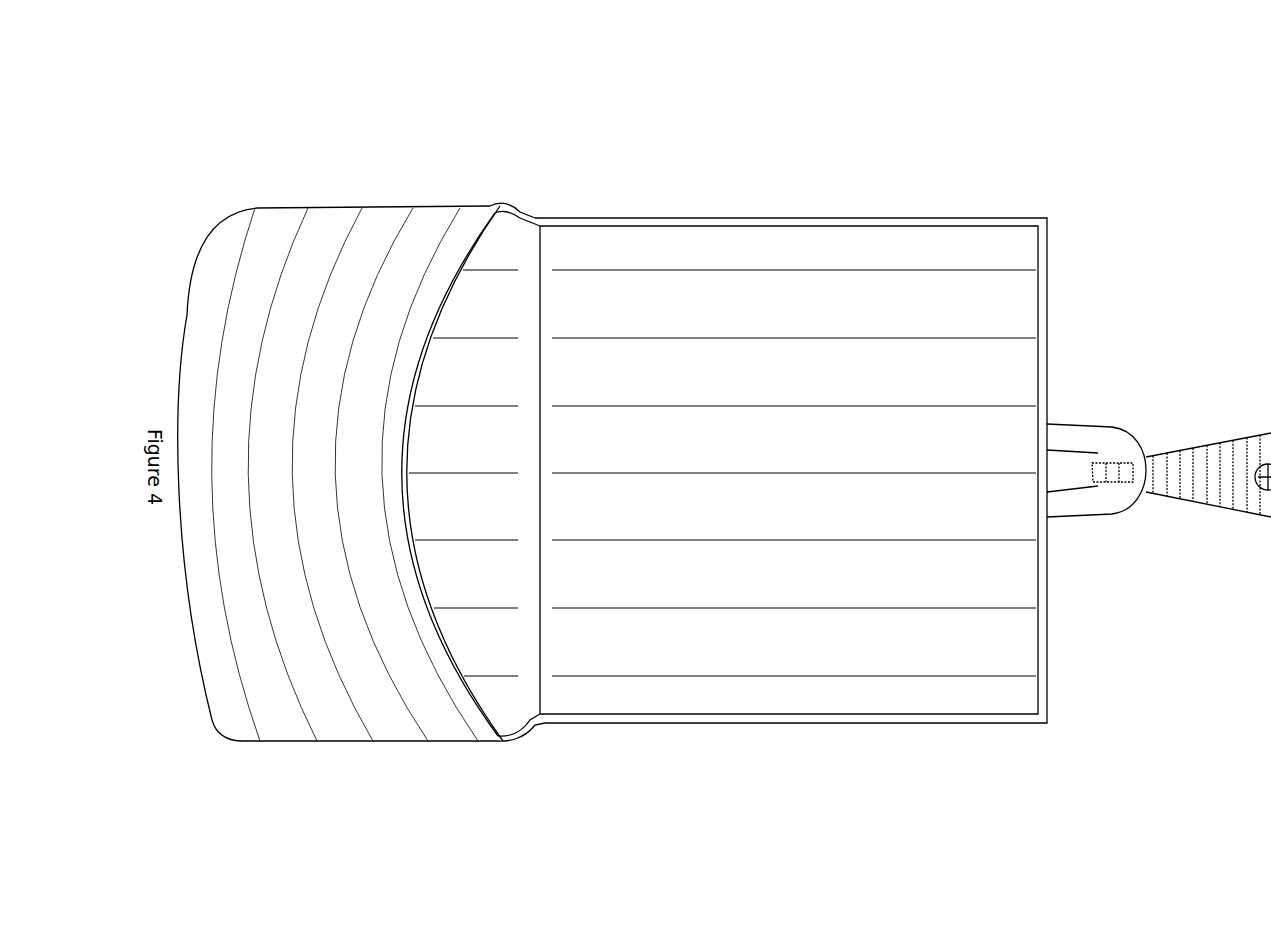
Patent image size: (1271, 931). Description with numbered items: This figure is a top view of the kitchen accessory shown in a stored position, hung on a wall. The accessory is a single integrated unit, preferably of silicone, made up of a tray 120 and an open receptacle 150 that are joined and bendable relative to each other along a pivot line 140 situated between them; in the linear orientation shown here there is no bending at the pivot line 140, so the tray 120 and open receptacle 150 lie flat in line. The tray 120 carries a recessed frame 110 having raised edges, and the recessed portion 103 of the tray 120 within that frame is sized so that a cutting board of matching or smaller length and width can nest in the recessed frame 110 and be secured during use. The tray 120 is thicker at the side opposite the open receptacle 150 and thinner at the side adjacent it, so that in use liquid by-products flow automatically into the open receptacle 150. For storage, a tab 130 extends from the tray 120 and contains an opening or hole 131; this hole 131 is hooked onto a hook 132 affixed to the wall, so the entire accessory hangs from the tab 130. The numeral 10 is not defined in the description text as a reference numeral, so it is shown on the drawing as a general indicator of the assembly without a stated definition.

The nozzle assembly 10 is at (1193, 110).
The recessed portion 103 is at (938, 598).
The recessed frame 110 is at (785, 716).
The tray 120 is at (717, 725).
The tab 130 is at (1080, 505).
The opening or hole 131 is at (1088, 472).
The hook 132 is at (1178, 462).
The pivot line 140 is at (545, 705).
The open receptacle 150 is at (275, 718).